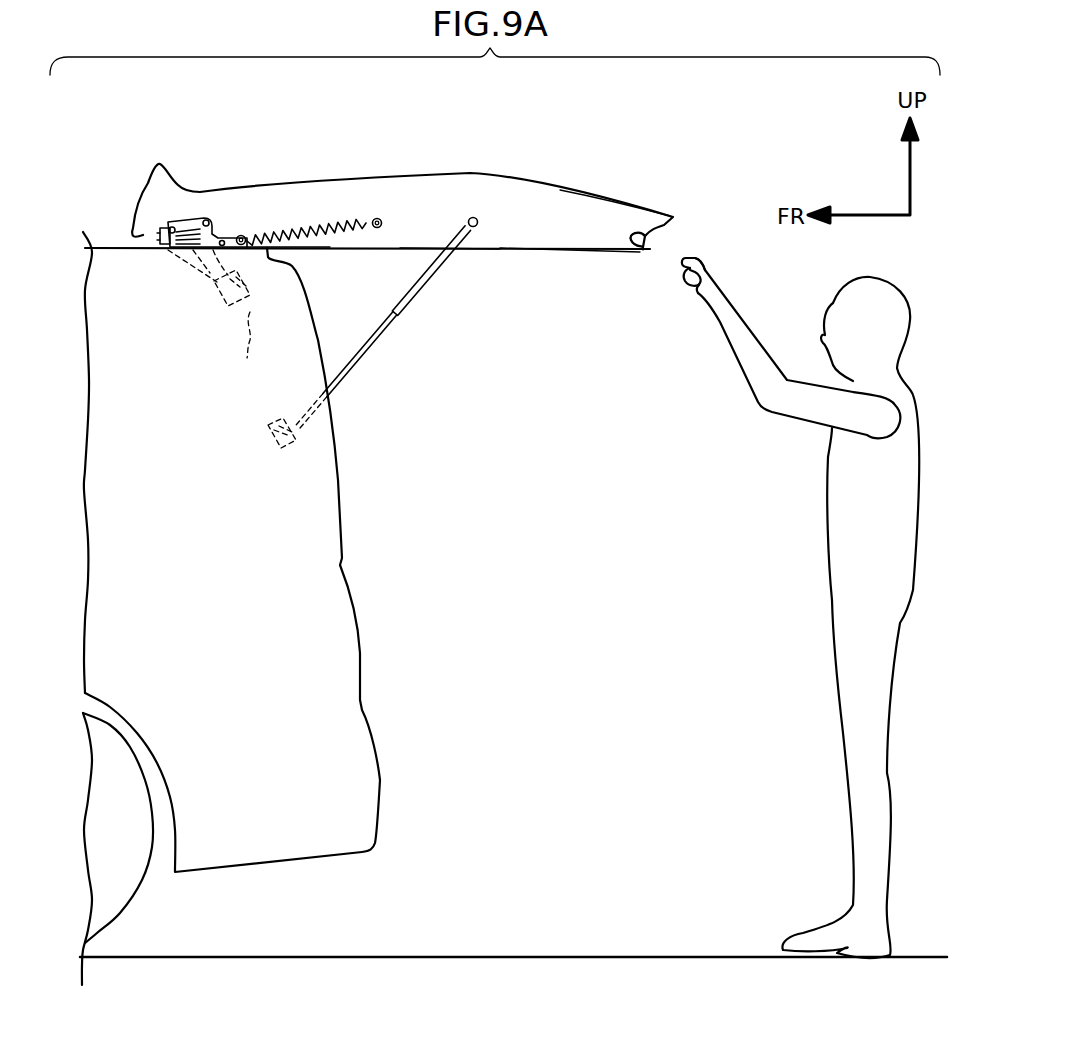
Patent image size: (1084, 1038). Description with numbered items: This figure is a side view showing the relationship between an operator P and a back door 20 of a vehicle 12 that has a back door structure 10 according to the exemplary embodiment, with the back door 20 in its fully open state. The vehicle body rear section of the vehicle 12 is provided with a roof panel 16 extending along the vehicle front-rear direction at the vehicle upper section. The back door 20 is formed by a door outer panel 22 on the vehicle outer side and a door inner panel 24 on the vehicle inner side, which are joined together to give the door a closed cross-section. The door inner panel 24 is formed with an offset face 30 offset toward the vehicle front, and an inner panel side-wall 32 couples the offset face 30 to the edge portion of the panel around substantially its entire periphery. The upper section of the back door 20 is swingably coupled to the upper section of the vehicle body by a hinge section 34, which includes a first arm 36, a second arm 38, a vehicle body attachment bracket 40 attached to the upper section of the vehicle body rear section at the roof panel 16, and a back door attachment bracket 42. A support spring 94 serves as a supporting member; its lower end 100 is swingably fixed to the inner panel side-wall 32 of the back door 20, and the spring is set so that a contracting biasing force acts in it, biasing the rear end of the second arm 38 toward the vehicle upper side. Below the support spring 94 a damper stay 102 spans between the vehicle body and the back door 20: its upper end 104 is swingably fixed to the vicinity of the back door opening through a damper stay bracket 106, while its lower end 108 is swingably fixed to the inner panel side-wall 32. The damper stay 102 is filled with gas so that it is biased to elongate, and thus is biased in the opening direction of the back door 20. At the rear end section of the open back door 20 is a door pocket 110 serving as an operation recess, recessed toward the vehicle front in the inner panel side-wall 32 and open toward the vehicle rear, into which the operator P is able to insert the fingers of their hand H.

The back door structure 10 is at (262, 162).
The vehicle 12 is at (160, 130).
The roof panel 16 is at (99, 247).
The back door 20 is at (540, 177).
The door outer panel 22 is at (600, 196).
The door inner panel 24 is at (572, 253).
The offset face 30 is at (482, 251).
The inner panel side-wall 32 is at (645, 256).
The hinge section 34 is at (237, 232).
The first arm 36 is at (163, 246).
The second arm 38 is at (200, 250).
The vehicle body attachment bracket 40 is at (236, 316).
The back door attachment bracket 42 is at (190, 216).
The support spring 94 is at (327, 249).
The lower end of the support spring 100 is at (380, 219).
The damper stay 102 is at (372, 355).
The upper end of the damper stay 104 is at (292, 437).
The damper stay bracket 106 is at (266, 437).
The lower end of the damper stay 108 is at (480, 225).
The door pocket 110 is at (655, 237).
The hand H is at (712, 275).
The operator P is at (912, 400).